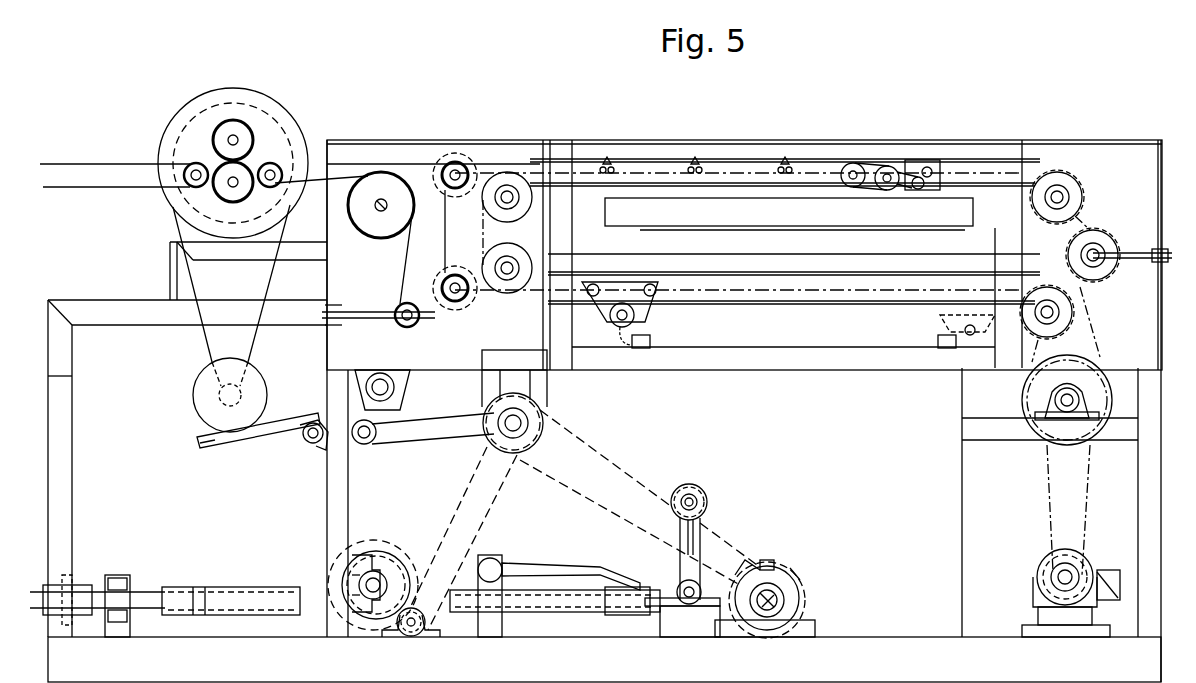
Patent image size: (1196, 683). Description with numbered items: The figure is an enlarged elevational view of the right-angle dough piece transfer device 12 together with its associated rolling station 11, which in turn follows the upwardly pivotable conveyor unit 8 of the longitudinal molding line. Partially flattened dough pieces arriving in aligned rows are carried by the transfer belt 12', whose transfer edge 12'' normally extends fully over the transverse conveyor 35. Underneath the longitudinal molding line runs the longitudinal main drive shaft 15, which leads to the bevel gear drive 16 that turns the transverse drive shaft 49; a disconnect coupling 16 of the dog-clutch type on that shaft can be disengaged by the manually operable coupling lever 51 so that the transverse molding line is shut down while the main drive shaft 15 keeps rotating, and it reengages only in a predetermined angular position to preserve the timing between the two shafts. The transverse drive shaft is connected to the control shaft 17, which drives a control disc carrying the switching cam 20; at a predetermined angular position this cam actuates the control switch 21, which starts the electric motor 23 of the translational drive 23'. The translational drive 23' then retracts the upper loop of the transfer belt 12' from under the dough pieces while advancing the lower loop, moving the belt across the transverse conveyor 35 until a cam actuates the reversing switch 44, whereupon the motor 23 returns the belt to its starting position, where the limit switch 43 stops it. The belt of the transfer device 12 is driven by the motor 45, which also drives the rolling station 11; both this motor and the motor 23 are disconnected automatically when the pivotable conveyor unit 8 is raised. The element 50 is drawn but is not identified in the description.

The upwardly pivotable conveyor unit 8 is at (100, 163).
The rolling station 11 is at (258, 90).
The right-angle dough piece transfer device 12 is at (718, 223).
The transfer belt 12' is at (381, 170).
The transfer edge 12'' is at (870, 142).
The transverse conveyor 35 is at (957, 200).
The limit switch 43 is at (650, 343).
The reversing switch 44 is at (938, 336).
The motor 45 is at (193, 397).
The longitudinal main drive shaft 15 is at (222, 586).
The bevel gear drive / disconnect coupling 16 is at (785, 585).
The control shaft 17 is at (416, 636).
The switching cam 20 is at (378, 567).
The control switch 21 is at (362, 545).
The electric motor 23 is at (1075, 541).
The translational drive 23' is at (1096, 307).
The transverse drive shaft 49 is at (785, 600).
The pulley lever 50 is at (735, 570).
The coupling lever 51 is at (566, 578).